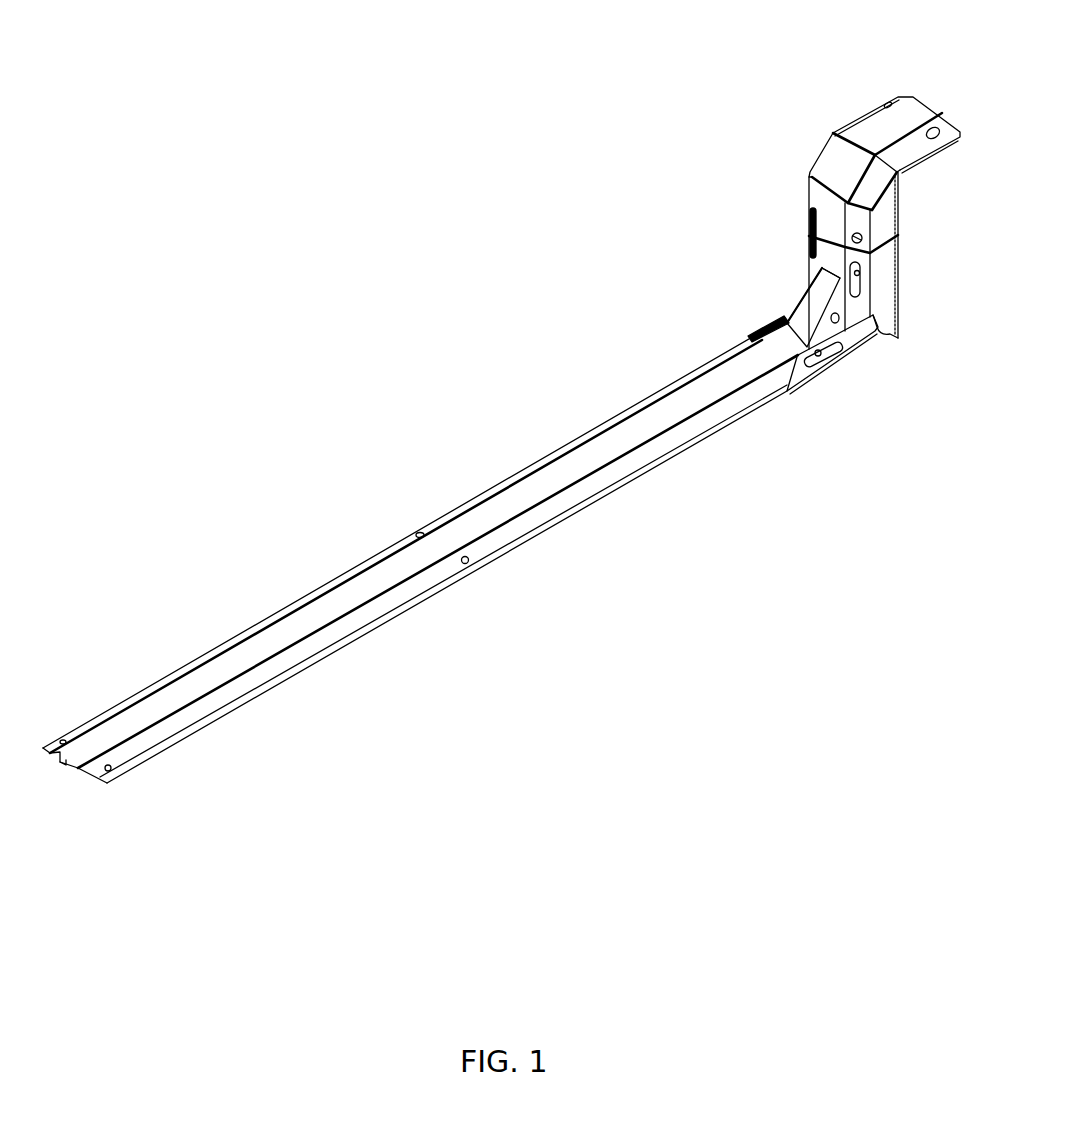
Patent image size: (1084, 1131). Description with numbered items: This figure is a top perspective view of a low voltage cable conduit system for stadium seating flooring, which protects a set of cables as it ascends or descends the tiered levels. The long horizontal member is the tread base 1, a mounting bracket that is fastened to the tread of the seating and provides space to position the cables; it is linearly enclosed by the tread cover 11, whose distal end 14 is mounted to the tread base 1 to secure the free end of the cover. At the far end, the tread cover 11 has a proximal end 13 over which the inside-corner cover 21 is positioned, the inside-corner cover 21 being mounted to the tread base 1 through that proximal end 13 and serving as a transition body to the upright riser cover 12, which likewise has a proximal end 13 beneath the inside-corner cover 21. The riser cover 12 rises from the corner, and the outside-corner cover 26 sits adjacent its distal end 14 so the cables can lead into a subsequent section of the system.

The tread base 1 is at (77, 805).
The tread cover 11 is at (348, 543).
The riser cover 12 is at (803, 257).
The proximal end 13 is at (753, 356).
The distal end 14 is at (803, 236).
The inside-corner cover 21 is at (784, 290).
The outside-corner cover 26 is at (855, 78).